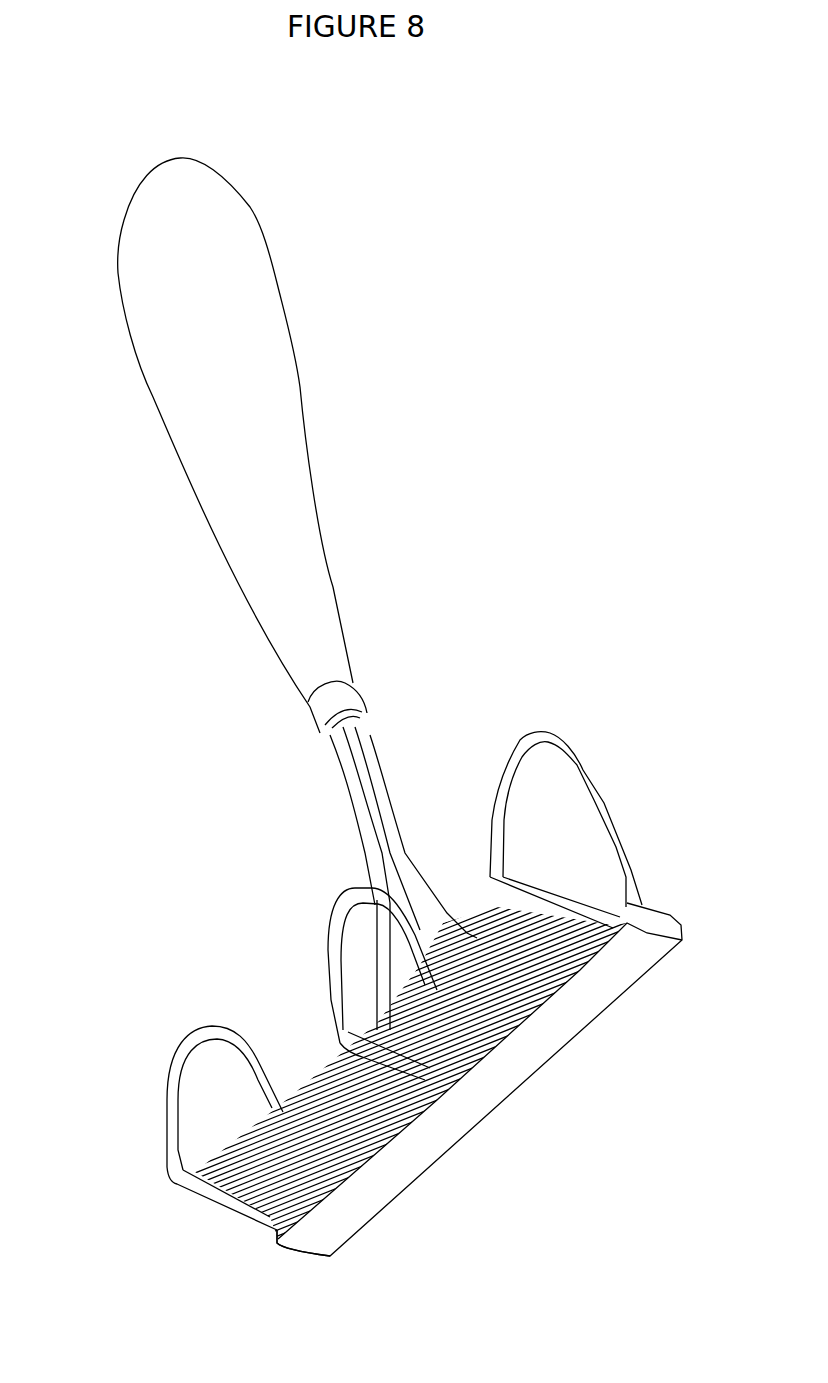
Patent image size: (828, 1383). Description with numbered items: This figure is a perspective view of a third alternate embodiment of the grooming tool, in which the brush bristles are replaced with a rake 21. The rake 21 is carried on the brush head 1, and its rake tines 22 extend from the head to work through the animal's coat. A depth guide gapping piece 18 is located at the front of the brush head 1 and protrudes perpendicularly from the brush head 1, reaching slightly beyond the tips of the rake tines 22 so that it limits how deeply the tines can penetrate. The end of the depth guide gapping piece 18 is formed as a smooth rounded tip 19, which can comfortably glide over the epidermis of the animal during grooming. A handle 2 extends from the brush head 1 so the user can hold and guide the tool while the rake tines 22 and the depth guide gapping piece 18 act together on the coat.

The brush head 1 is at (588, 1023).
The handle 2 is at (300, 387).
The depth guide gapping piece 18 is at (558, 737).
The smooth rounded tip 19 is at (167, 1165).
The rake 21 is at (233, 1265).
The rake tines 22 is at (292, 1094).